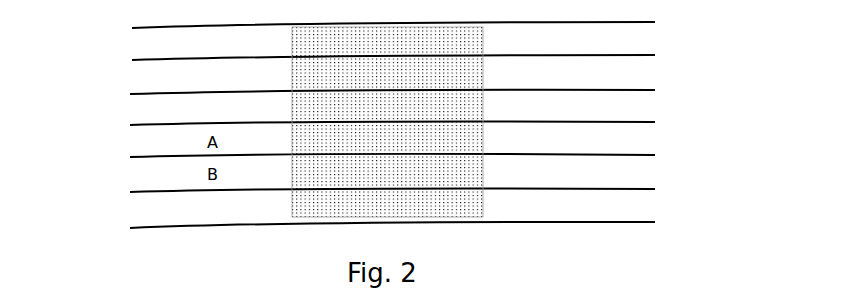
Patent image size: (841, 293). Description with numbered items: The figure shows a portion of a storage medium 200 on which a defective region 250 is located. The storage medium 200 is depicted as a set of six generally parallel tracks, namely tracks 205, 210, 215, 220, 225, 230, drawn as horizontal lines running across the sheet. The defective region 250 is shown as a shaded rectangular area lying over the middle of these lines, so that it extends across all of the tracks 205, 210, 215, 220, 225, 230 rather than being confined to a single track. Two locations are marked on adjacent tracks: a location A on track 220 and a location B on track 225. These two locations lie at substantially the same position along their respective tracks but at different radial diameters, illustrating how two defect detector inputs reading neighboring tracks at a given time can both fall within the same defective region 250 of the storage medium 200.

The storage medium 200 is at (694, 122).
The track 205 is at (114, 42).
The track 210 is at (111, 68).
The track 215 is at (116, 114).
The track 220 is at (114, 141).
The track 225 is at (116, 175).
The track 230 is at (114, 201).
The defective region 250 is at (374, 152).